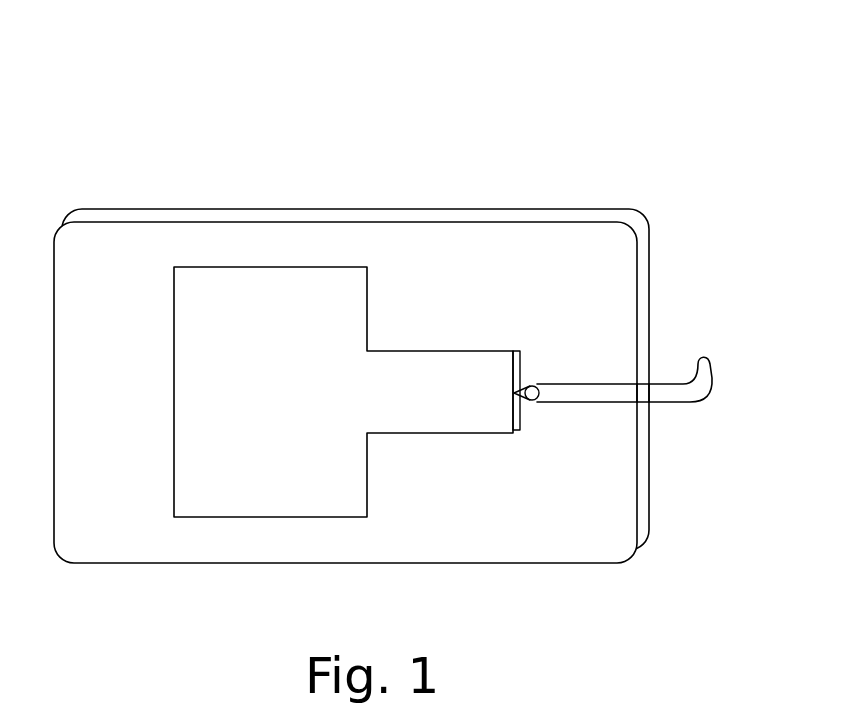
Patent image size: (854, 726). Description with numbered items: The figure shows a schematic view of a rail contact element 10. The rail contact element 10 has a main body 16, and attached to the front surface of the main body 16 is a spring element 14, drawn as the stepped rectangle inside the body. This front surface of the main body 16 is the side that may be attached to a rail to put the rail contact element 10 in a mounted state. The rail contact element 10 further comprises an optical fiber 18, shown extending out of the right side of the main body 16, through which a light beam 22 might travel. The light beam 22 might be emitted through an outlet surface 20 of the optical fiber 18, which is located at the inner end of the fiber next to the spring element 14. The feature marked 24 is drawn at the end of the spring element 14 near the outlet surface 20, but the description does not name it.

The rail contact element 10 is at (358, 157).
The spring element 14 is at (278, 420).
The main body 16 is at (617, 269).
The optical fiber 18 is at (700, 367).
The outlet surface 20 is at (535, 401).
The light beam 22 is at (532, 387).
The receptacle 24 is at (519, 432).